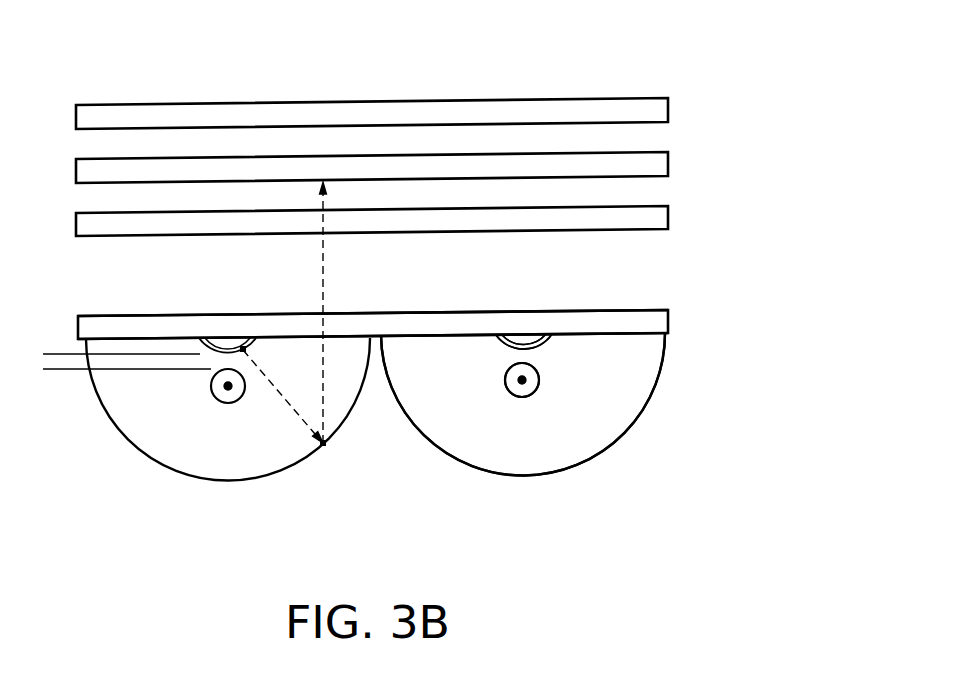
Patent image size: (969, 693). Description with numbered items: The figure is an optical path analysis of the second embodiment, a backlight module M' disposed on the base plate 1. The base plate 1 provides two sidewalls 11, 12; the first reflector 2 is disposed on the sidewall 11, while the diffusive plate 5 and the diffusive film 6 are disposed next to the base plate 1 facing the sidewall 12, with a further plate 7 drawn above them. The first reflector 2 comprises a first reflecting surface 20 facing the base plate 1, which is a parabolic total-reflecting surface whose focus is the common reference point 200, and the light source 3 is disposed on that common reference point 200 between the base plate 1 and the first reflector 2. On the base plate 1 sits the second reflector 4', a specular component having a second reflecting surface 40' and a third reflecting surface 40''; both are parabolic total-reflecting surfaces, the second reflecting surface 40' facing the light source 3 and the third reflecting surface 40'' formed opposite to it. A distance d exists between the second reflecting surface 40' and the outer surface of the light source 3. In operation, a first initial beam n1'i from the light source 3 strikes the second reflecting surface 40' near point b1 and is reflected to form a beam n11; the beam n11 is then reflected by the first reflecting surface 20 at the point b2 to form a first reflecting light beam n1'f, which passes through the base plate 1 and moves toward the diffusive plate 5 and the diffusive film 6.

The backlight module M' is at (48, 67).
The third plate 7 is at (678, 106).
The diffusive film 6 is at (678, 160).
The diffusive plate 5 is at (678, 213).
The base plate 1 is at (678, 317).
The sidewall 12 is at (617, 310).
The sidewall 11 is at (608, 333).
The second reflector 4' is at (622, 295).
The second reflecting surface 40' is at (625, 363).
The third reflecting surface 40'' is at (629, 379).
The first reflector 2 is at (616, 449).
The first reflecting surface 20 is at (556, 492).
The common reference point 200 is at (521, 381).
The light source 3 is at (517, 405).
The distance d is at (51, 305).
The first reflecting light beam n1'f is at (372, 312).
The first initial beam n1'i is at (222, 294).
The light beam n11 is at (286, 404).
The point b1 is at (264, 354).
The point b2 is at (341, 458).